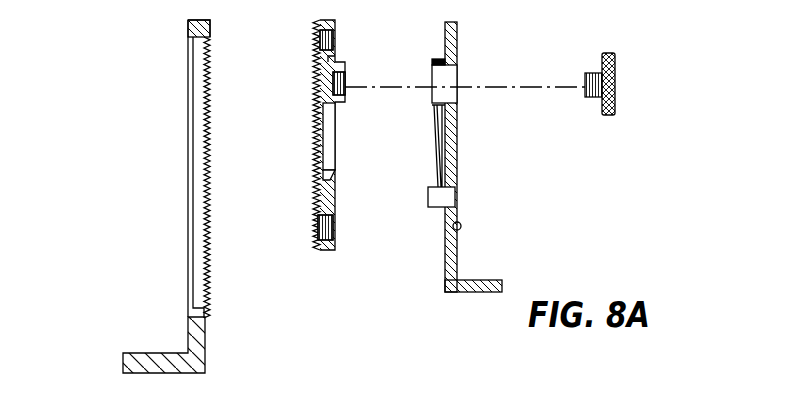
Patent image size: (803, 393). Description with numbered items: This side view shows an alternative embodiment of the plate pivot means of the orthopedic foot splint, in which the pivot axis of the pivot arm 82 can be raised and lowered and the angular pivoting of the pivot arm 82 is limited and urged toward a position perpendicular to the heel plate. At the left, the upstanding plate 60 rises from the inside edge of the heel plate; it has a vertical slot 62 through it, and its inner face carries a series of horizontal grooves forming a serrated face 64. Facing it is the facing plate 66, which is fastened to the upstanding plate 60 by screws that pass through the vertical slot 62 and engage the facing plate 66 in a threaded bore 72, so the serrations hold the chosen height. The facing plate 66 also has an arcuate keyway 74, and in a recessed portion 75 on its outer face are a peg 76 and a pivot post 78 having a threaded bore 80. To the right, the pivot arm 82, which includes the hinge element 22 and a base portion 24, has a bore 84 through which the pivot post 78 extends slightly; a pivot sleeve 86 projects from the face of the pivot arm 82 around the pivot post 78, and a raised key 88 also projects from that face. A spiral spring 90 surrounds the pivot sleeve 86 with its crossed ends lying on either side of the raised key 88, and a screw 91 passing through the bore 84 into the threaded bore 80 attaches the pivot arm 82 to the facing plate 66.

The hinge element 22 is at (467, 234).
The base plate 24 is at (470, 292).
The upstanding plate 60 is at (206, 336).
The vertical slot 62 is at (207, 199).
The serrated face 64 is at (208, 126).
The facing plate 66 is at (323, 251).
The threaded bore 72 is at (333, 43).
The arcuate keyway 74 is at (333, 197).
The recessed portion 75 is at (324, 133).
The peg 76 is at (331, 174).
The pivot post 78 is at (339, 97).
The threaded bore 80 is at (344, 80).
The pivot arm 82 is at (448, 22).
The bore 84 is at (455, 71).
The pivot sleeve 86 is at (436, 108).
The raised key 88 is at (433, 207).
The spiral spring 90 is at (438, 60).
The screw 91 is at (615, 87).